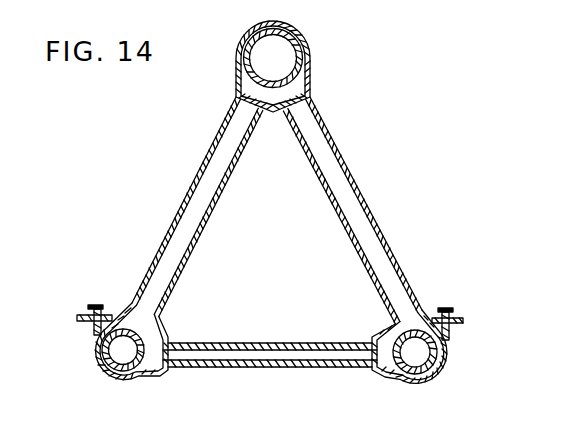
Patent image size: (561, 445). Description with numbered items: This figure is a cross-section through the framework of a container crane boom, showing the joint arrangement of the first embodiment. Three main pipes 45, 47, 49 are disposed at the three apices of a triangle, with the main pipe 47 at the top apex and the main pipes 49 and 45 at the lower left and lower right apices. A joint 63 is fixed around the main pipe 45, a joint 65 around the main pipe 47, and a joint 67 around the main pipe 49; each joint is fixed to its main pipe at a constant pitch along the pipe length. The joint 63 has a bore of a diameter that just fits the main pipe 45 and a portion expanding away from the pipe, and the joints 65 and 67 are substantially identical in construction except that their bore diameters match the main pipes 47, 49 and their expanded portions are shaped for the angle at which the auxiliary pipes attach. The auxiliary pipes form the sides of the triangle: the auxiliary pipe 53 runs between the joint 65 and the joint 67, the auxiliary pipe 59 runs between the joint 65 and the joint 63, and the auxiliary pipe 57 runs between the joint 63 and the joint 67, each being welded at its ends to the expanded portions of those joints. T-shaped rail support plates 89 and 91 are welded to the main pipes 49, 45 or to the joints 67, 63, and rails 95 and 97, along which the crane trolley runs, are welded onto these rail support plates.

The main pipe 45 is at (444, 365).
The main pipe 47 is at (312, 79).
The main pipe 49 is at (102, 362).
The auxiliary pipe 53 is at (189, 192).
The auxiliary pipe 57 is at (249, 343).
The auxiliary pipe 59 is at (363, 181).
The joint 63 is at (416, 309).
The joint 65 is at (309, 48).
The joint 67 is at (158, 374).
The T-shaped rail support plate 89 is at (84, 332).
The T-shaped rail support plate 91 is at (458, 325).
The rail 95 is at (95, 305).
The rail 97 is at (448, 307).